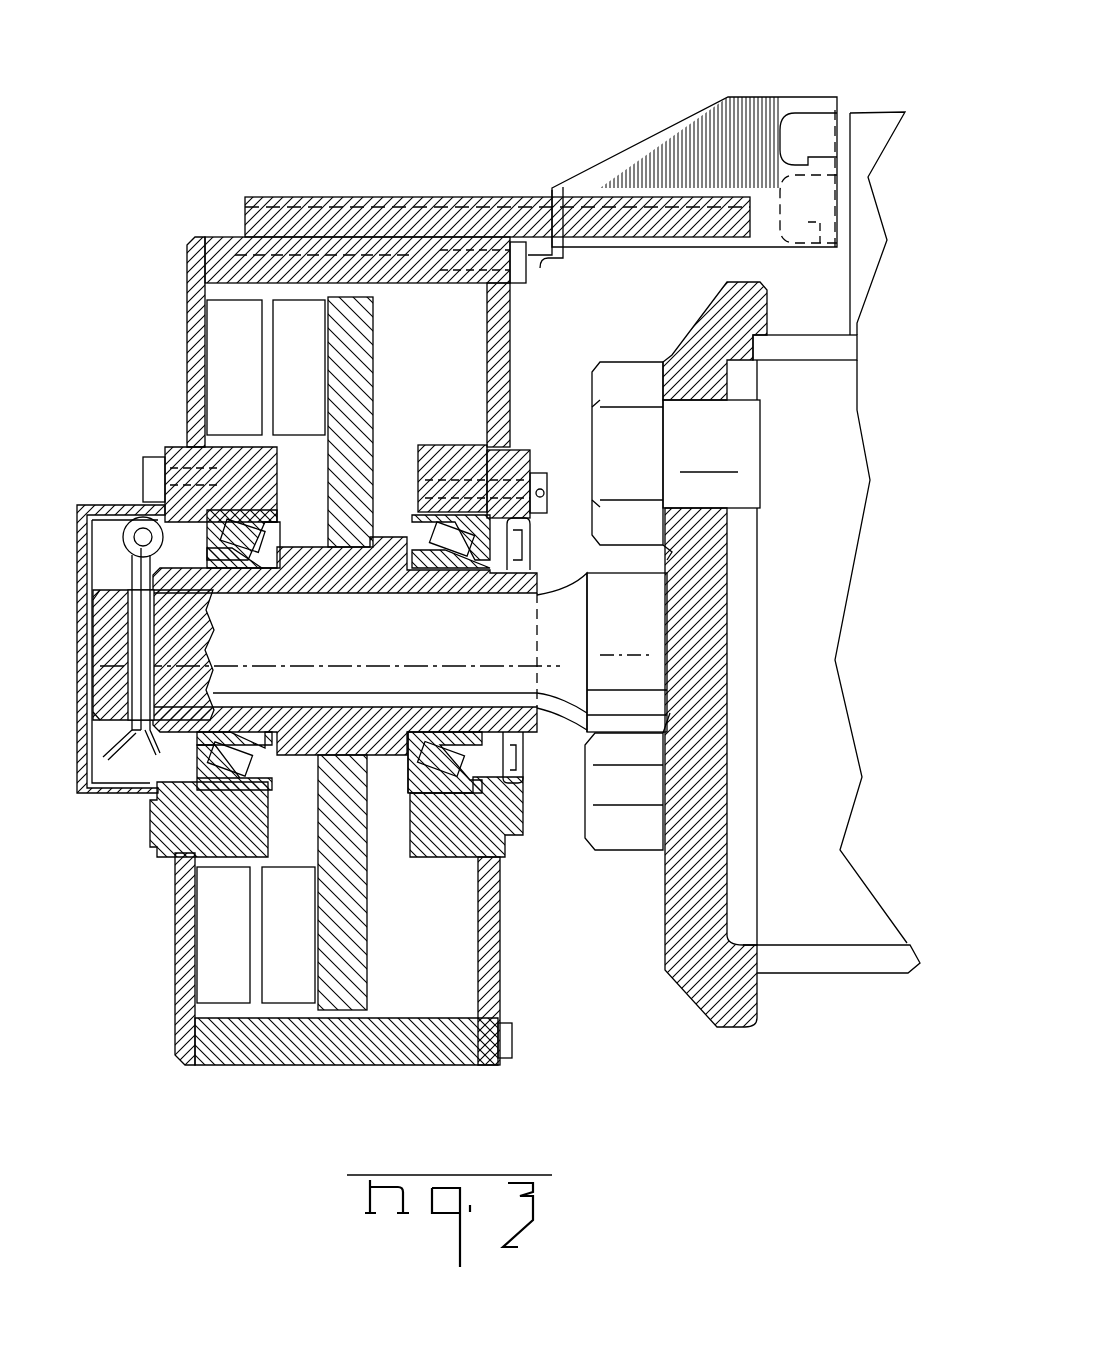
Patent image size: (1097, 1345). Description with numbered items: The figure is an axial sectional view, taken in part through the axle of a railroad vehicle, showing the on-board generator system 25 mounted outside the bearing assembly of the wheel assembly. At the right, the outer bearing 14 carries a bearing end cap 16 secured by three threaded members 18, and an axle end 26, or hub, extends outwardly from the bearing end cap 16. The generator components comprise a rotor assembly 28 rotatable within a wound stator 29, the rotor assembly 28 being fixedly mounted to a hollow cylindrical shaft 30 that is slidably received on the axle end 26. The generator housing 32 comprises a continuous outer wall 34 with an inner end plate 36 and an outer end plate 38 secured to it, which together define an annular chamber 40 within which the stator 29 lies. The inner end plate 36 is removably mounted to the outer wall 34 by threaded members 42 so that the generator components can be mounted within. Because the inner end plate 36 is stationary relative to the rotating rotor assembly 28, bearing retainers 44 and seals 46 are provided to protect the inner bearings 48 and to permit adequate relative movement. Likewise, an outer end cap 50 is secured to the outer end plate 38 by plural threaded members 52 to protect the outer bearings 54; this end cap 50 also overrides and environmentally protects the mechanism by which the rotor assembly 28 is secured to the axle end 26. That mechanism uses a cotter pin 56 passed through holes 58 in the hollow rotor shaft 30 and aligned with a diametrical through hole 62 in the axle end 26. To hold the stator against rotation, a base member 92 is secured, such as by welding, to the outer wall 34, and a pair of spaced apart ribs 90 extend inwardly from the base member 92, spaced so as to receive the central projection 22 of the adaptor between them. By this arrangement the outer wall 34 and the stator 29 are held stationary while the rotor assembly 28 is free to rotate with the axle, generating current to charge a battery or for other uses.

The outer bearing 14 is at (868, 413).
The bearing end cap 16 is at (690, 1010).
The threaded members 18 is at (612, 390).
The central projection 22 is at (840, 112).
The on-board generator system 25 is at (182, 316).
The axle end 26 is at (508, 660).
The rotor assembly 28 is at (372, 356).
The wound stator 29 is at (237, 318).
The cylindrical shaft 30 is at (208, 583).
The generator housing 32 is at (176, 976).
The outer wall 34 is at (343, 208).
The inner end plate 36 is at (510, 311).
The outer end plate 38 is at (196, 356).
The annular chamber 40 is at (395, 982).
The threaded members 42 is at (540, 270).
The bearing retainers 44 is at (522, 460).
The seals 46 is at (530, 765).
The inner bearings 48 is at (458, 778).
The outer end cap 50 is at (80, 730).
The threaded members 52 is at (165, 468).
The outer bearings 54 is at (292, 545).
The cotter pin 56 is at (142, 648).
The holes 58 is at (133, 615).
The diametrical through hole 62 is at (150, 632).
The ribs 90 is at (775, 97).
The base member 92 is at (510, 196).